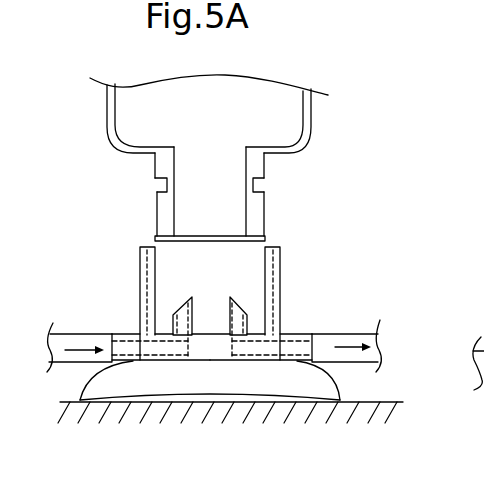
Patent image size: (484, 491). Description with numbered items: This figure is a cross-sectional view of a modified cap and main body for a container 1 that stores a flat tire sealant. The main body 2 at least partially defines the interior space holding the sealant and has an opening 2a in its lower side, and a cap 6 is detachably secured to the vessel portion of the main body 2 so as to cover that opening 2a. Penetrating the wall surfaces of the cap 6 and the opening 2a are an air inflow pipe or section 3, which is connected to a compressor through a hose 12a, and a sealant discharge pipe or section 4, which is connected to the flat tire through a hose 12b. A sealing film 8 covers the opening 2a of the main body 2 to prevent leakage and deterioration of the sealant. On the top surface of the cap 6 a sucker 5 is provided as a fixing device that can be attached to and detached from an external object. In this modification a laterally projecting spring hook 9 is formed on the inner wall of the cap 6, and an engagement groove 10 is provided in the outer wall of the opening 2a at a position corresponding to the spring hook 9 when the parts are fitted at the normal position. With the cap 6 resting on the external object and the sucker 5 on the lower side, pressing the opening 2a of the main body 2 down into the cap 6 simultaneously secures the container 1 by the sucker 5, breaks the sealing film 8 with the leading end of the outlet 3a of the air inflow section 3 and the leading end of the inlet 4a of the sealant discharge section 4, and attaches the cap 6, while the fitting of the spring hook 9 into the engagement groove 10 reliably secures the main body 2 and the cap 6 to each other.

The container 1 is at (361, 209).
The main body 2 is at (312, 120).
The opening 2a is at (233, 207).
The air inflow pipe or section 3 is at (130, 366).
The outlet 3a is at (163, 334).
The sealant discharge pipe or section 4 is at (300, 367).
The inlet 4a is at (254, 333).
The sucker 5 is at (200, 378).
The cap 6 is at (136, 262).
The sealing film 8 is at (233, 242).
The spring hook 9 is at (162, 289).
The engagement groove 10 is at (253, 185).
The hose 12a is at (63, 367).
The hose 12b is at (360, 367).